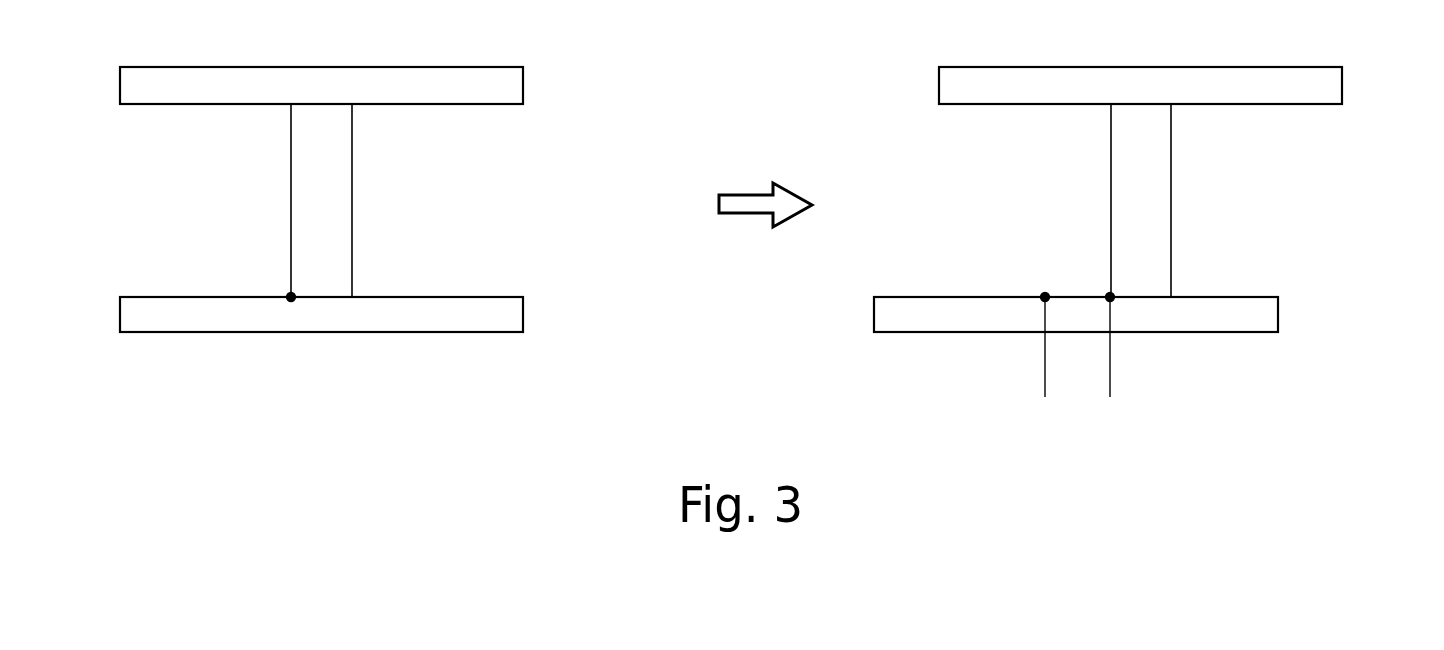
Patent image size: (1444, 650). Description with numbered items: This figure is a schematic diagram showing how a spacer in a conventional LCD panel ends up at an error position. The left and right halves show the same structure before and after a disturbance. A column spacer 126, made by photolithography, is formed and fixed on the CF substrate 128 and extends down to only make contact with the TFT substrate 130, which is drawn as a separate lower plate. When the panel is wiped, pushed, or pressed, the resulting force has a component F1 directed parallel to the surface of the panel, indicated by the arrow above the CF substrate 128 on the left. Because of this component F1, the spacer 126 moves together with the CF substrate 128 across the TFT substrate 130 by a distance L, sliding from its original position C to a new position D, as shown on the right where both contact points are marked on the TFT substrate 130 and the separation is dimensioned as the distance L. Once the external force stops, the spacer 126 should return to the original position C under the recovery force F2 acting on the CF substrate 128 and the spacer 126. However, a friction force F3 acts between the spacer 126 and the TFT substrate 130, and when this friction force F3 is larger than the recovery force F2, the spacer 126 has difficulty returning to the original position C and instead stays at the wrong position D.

The spacer 126 is at (332, 190).
The CF substrate 128 is at (523, 87).
The TFT substrate 130 is at (523, 313).
The original position C is at (289, 292).
The new position D is at (1108, 292).
The distance L is at (1177, 380).
The force component F1 is at (222, 35).
The recovery force F2 is at (1042, 35).
The friction force F3 is at (1120, 455).